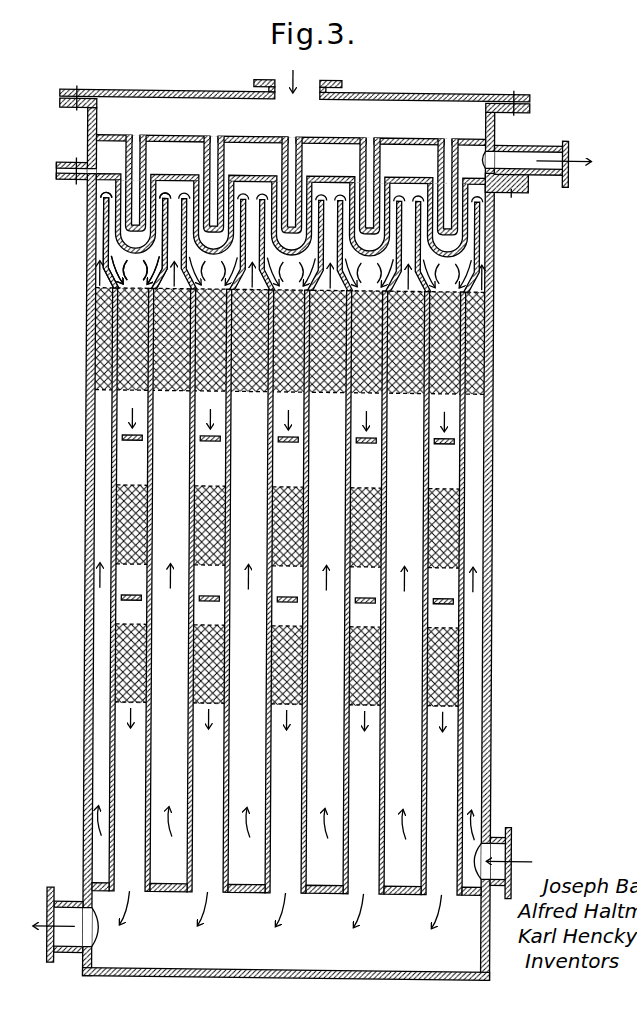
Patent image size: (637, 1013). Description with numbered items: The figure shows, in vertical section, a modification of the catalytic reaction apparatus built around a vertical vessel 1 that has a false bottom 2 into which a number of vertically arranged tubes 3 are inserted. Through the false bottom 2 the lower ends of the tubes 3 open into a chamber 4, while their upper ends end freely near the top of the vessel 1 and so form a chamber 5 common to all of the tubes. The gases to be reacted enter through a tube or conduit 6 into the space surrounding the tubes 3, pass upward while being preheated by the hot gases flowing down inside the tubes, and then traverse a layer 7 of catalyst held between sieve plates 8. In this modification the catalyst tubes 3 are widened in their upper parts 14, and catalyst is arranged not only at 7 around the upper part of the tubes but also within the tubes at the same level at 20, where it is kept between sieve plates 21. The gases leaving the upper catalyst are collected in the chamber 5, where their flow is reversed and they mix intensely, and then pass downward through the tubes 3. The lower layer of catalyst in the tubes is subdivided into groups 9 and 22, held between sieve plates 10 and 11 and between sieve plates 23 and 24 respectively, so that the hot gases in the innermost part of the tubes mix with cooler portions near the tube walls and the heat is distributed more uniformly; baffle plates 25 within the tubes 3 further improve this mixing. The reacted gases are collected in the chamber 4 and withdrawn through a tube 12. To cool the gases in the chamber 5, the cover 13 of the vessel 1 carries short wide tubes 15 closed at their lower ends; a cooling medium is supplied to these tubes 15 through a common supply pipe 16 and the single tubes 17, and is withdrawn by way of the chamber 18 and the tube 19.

The vessel 1 is at (88, 453).
The false bottom 2 is at (287, 868).
The tubes 3 is at (111, 507).
The chamber 4 is at (286, 958).
The chamber 5 is at (176, 203).
The tube or conduit 6 is at (511, 861).
The layer of the catalyst 7 is at (118, 364).
The sieve plates 8 is at (93, 299).
The layers of the catalyst 9 is at (120, 526).
The sieve plate 10 is at (287, 577).
The sieve plate 11 is at (287, 478).
The tube 12 is at (52, 938).
The cover 13 is at (106, 172).
The upper parts 14 is at (103, 263).
The tubes 15 is at (139, 262).
The supply pipe 16 is at (315, 72).
The single tubes 17 is at (216, 143).
The chamber 18 is at (290, 160).
The tube 19 is at (511, 148).
The catalyst 20 is at (158, 335).
The sieve plates 21 is at (126, 306).
The group of catalyst 22 is at (113, 660).
The sieve plate 23 is at (287, 617).
The sieve plate 24 is at (284, 717).
The baffle plates 25 is at (76, 603).